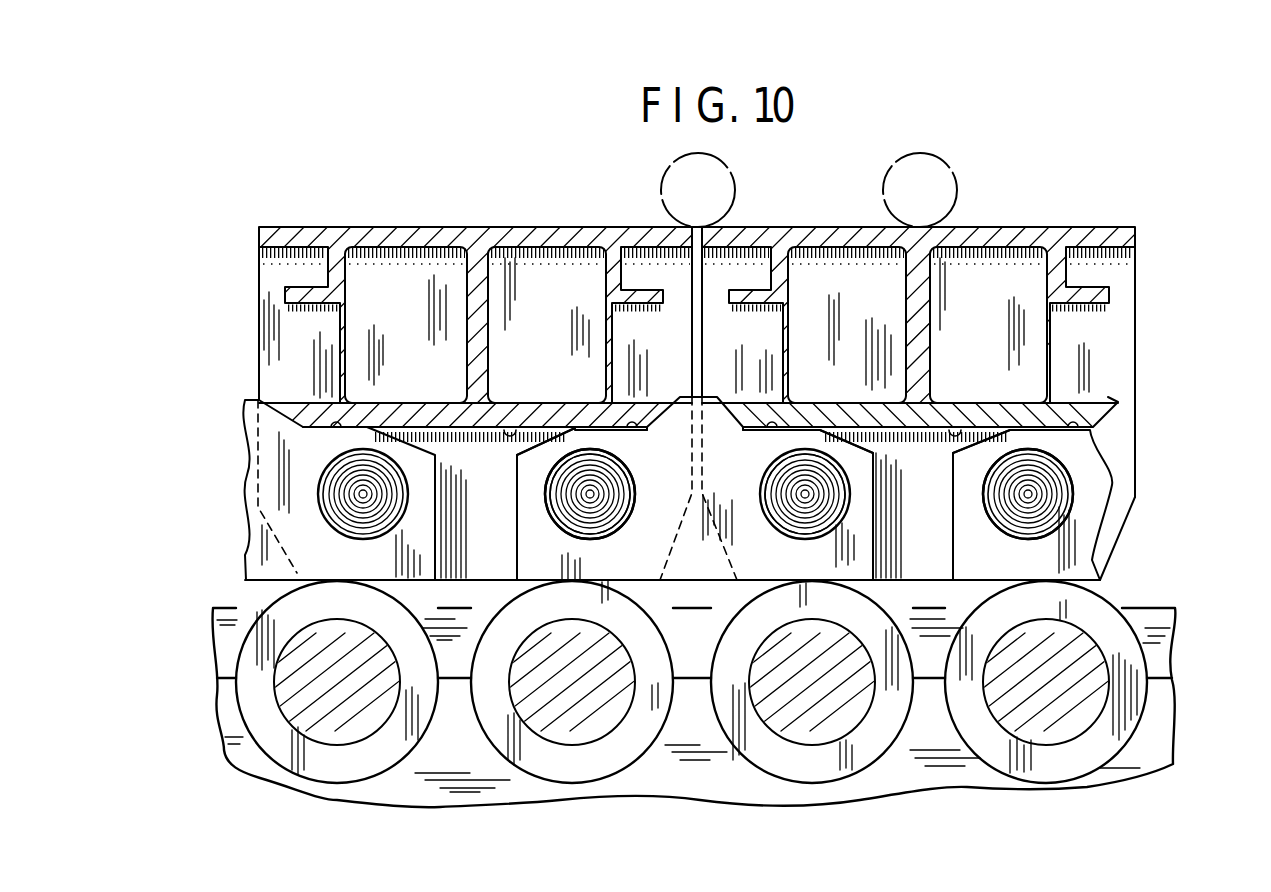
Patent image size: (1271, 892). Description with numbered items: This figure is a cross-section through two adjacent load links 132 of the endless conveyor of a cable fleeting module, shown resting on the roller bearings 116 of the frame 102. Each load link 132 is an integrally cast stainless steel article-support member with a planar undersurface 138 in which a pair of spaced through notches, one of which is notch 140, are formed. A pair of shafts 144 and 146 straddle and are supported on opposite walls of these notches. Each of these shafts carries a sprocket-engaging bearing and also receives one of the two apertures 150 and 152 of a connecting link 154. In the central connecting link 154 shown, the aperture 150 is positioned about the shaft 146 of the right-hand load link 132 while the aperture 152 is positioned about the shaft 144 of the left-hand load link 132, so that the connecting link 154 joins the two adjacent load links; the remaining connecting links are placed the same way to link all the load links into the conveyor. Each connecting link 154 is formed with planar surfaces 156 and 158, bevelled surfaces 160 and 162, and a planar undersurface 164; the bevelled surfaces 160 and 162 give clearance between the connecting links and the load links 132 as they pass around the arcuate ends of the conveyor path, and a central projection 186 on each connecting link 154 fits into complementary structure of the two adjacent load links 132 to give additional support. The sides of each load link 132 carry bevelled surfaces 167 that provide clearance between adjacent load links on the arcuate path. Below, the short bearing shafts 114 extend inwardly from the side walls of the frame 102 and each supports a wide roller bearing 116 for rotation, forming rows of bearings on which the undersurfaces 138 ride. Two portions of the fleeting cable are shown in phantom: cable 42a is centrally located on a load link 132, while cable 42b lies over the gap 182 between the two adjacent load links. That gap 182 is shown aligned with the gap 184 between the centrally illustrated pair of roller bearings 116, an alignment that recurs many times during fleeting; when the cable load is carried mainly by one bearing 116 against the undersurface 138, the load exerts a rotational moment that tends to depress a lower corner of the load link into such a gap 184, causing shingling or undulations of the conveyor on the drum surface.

The cable portion 42a is at (953, 167).
The cable portion 42b is at (734, 167).
The frame 102 is at (1182, 716).
The short bearing shafts 114 is at (612, 707).
The roller bearing 116 is at (277, 608).
The load link 132 is at (366, 222).
The planar undersurface 138 is at (480, 587).
The through notch 140 is at (510, 434).
The shaft 144 is at (615, 493).
The shaft 146 is at (360, 510).
The aperture 150 is at (804, 455).
The aperture 152 is at (590, 455).
The connecting link 154 is at (508, 559).
The planar surface 156 is at (338, 422).
The planar surface 158 is at (632, 424).
The bevelled surface 160 is at (870, 440).
The bevelled surface 162 is at (523, 448).
The planar undersurface 164 is at (752, 582).
The bevelled surfaces 167 is at (268, 513).
The gap 182 is at (700, 285).
The gap 184 is at (728, 600).
The central projection 186 is at (683, 388).